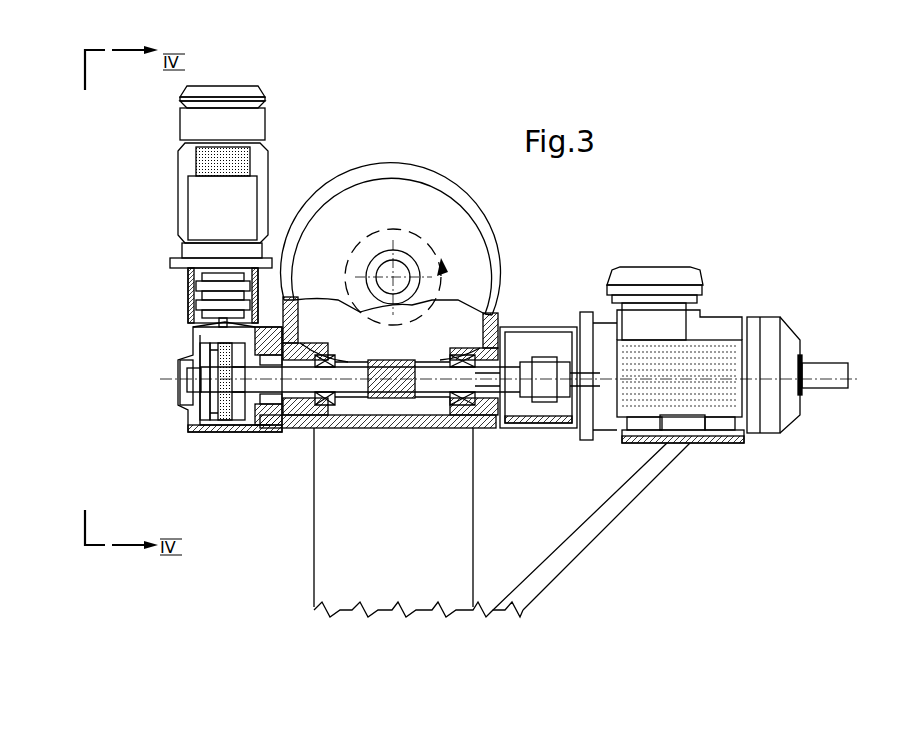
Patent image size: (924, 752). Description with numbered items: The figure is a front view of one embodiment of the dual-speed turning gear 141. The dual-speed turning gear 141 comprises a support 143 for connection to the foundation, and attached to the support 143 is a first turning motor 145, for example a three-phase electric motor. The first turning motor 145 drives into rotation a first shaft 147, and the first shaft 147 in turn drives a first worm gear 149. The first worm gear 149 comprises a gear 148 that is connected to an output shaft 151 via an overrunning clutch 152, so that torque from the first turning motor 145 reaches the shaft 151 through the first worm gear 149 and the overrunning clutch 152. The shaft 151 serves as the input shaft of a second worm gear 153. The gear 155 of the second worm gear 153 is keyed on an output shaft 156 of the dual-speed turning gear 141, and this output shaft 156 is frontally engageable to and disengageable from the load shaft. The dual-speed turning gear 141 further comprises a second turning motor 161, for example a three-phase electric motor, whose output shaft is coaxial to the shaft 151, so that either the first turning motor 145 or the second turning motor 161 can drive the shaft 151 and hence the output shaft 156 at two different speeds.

The dual-speed turning gear 141 is at (632, 198).
The support 143 is at (330, 528).
The first turning motor 145 is at (180, 118).
The first shaft 147 is at (190, 292).
The gear 148 is at (205, 350).
The first worm gear 149 is at (170, 402).
The output shaft 151 is at (355, 405).
The overrunning clutch 152 is at (240, 418).
The second worm gear 153 is at (445, 205).
The gear 155 is at (414, 277).
The output shaft 156 is at (380, 272).
The second turning motor 161 is at (725, 318).